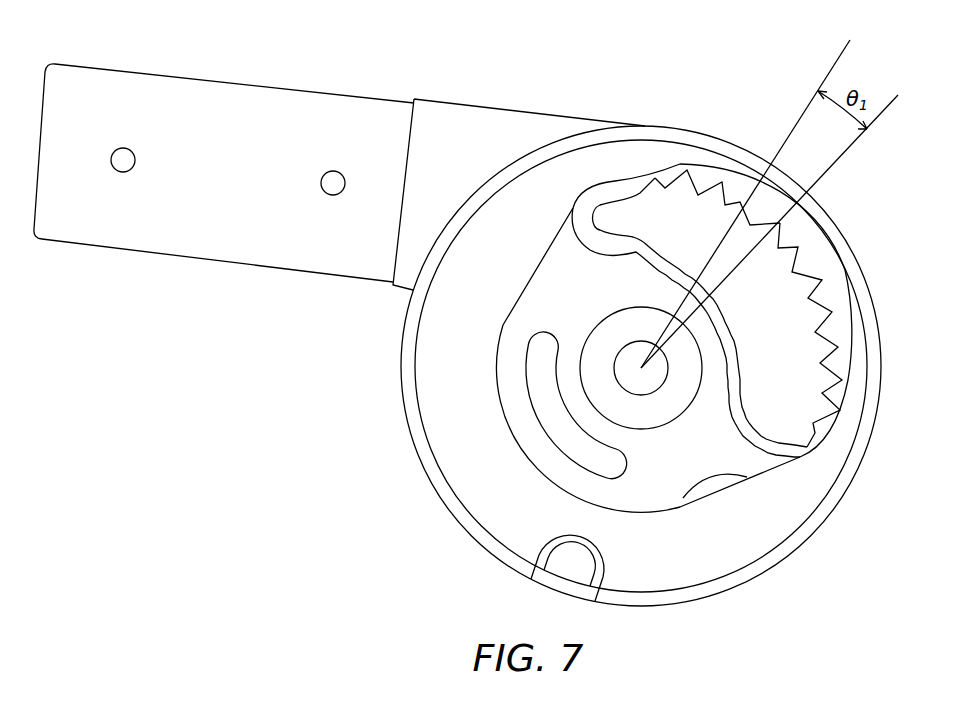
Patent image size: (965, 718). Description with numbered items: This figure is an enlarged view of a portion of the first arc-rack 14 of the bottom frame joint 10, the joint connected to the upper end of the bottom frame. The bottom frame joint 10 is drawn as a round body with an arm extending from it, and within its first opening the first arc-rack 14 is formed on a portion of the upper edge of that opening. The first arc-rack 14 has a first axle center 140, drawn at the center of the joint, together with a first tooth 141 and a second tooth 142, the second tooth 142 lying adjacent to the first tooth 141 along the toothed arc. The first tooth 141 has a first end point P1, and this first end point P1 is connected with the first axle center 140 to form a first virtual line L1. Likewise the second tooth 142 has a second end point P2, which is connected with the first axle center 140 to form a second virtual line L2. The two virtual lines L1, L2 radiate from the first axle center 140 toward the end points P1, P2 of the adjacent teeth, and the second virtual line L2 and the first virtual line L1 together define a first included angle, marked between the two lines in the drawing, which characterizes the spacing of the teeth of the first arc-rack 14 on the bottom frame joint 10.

The bottom frame joint 10 is at (477, 132).
The first arc-rack 14 is at (810, 298).
The first axle center 140 is at (641, 368).
The first tooth 141 is at (740, 200).
The second tooth 142 is at (776, 233).
The first virtual line L1 is at (758, 190).
The second virtual line L2 is at (788, 218).
The first end point P1 is at (750, 225).
The second end point P2 is at (780, 222).